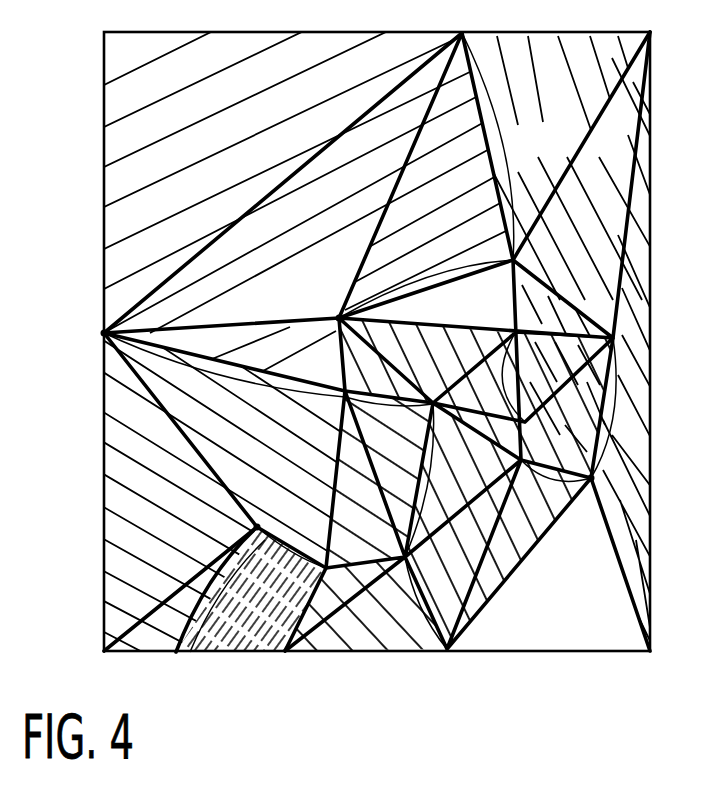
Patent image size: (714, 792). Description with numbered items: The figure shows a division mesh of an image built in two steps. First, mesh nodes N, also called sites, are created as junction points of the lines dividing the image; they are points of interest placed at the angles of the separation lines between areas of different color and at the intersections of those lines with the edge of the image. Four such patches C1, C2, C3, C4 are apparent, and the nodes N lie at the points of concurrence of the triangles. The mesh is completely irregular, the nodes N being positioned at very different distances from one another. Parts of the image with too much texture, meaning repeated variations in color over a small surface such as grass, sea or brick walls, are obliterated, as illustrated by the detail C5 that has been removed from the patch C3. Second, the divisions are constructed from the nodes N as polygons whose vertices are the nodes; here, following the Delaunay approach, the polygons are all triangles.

The patch C1 is at (330, 141).
The patch C2 is at (581, 146).
The patch C3 is at (192, 430).
The patch C4 is at (559, 407).
The detail C5 is at (260, 627).
The node N is at (104, 333).